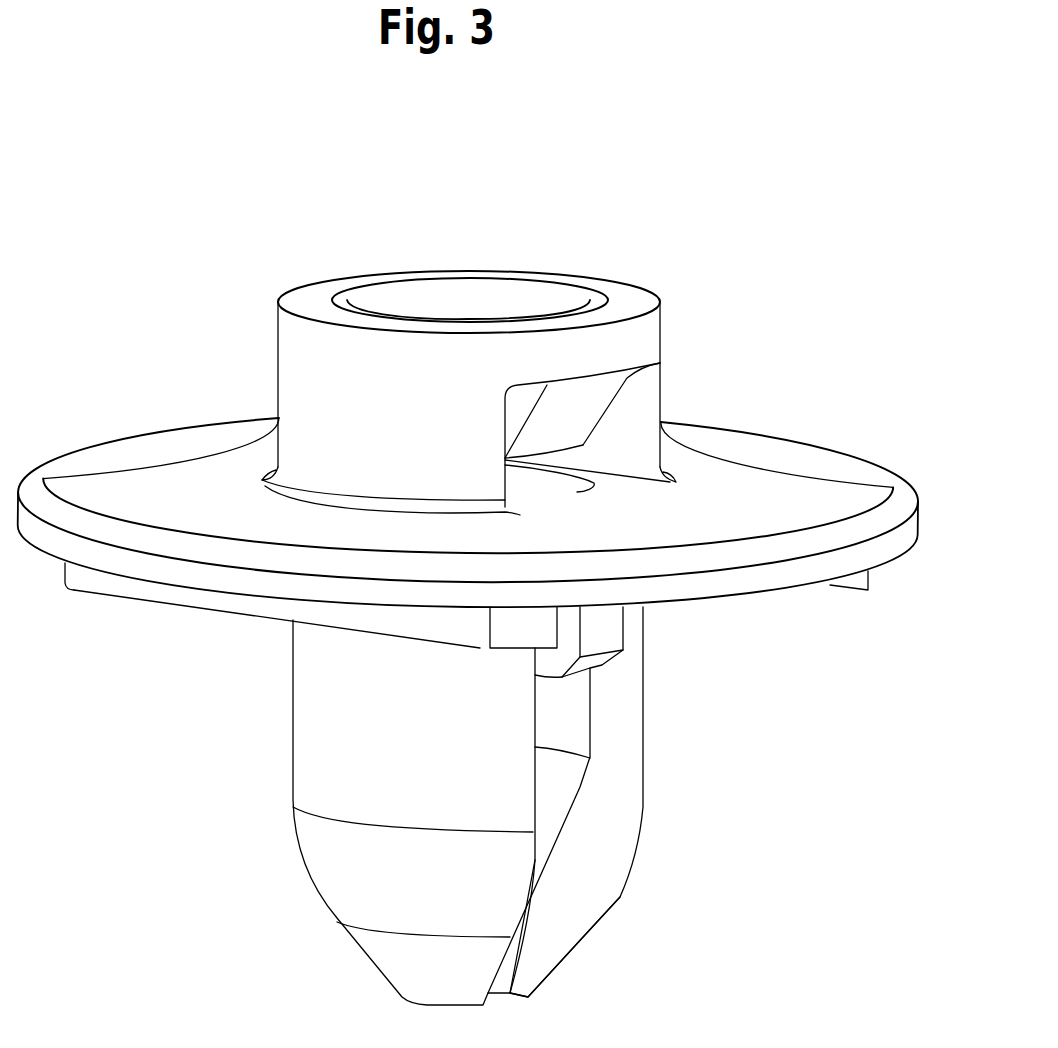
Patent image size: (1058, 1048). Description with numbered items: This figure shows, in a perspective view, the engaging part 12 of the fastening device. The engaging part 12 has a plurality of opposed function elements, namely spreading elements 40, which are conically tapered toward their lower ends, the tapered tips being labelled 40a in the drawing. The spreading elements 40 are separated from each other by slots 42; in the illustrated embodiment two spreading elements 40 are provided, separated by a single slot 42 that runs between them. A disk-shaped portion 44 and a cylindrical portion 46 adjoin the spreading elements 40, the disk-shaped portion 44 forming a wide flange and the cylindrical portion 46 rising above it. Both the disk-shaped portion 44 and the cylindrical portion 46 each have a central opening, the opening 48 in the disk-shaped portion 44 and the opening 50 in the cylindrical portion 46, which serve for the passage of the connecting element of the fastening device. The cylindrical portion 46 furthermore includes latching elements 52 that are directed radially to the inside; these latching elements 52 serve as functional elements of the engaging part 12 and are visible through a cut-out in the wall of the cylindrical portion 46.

The engaging part 12 is at (683, 251).
The spreading elements 40 is at (313, 733).
The tapered leg tips 40a is at (583, 937).
The slot 42 is at (560, 785).
The disk-shaped portion 44 is at (137, 463).
The cylindrical portion 46 is at (316, 370).
The central opening 48 is at (537, 490).
The central opening 50 is at (463, 318).
The latching elements 52 is at (597, 403).